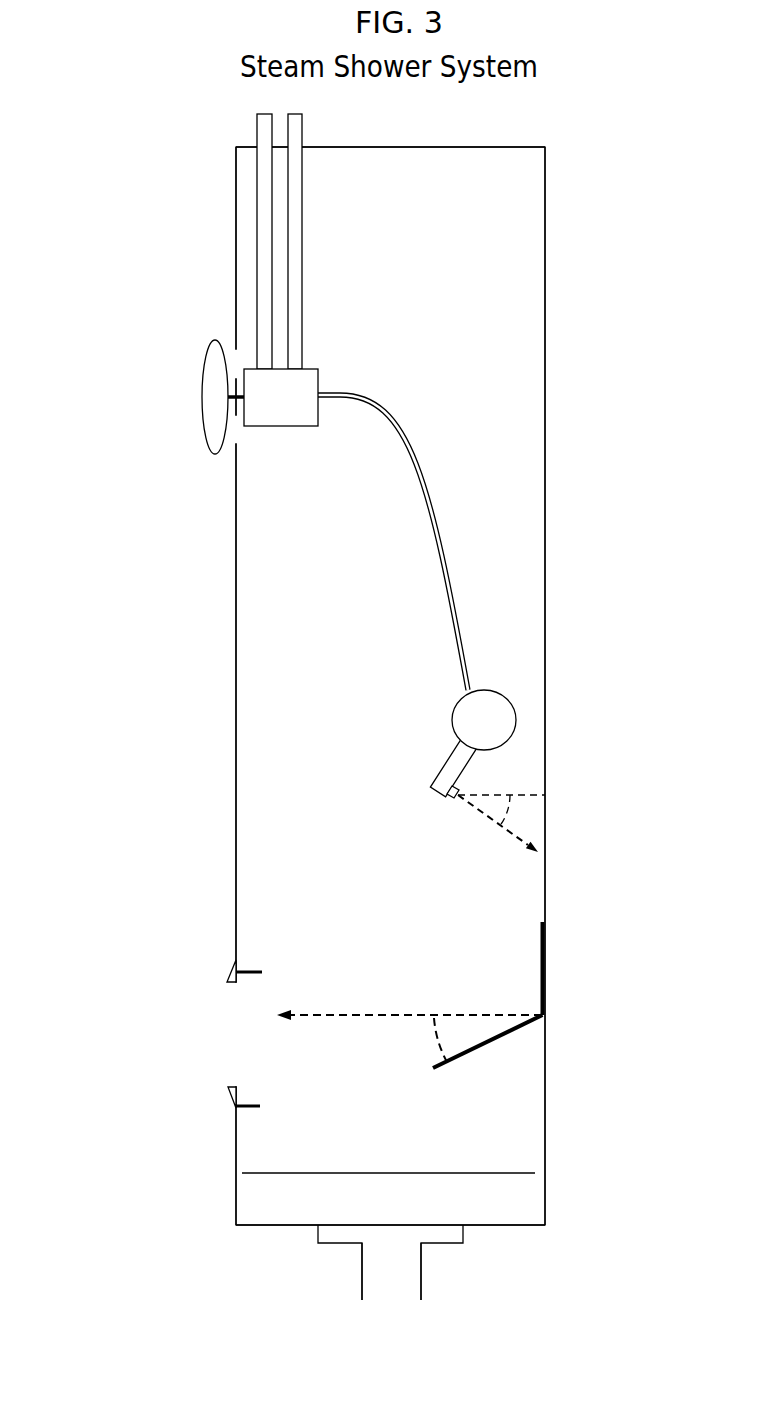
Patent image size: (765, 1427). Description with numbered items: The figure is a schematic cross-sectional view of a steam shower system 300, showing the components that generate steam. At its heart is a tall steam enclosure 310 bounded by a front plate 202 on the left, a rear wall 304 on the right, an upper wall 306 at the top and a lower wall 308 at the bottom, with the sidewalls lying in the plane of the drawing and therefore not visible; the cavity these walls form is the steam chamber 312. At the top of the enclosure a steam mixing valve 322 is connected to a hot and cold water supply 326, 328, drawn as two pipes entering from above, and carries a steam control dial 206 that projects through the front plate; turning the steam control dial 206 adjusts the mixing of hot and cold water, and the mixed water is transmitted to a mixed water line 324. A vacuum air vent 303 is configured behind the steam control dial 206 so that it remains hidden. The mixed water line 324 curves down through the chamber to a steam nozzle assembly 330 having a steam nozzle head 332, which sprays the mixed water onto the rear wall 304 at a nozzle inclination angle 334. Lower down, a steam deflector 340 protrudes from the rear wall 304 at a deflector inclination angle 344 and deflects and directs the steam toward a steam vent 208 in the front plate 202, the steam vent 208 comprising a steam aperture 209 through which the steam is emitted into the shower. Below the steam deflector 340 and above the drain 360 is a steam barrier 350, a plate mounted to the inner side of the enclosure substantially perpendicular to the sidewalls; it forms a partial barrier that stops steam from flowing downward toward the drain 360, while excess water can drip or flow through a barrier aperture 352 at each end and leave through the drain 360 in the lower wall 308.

The steam shower system 300 is at (152, 173).
The steam enclosure 310 is at (560, 243).
The front plate 202 is at (230, 638).
The rear wall 304 is at (550, 543).
The upper wall 306 is at (472, 152).
The steam chamber 312 is at (380, 607).
The steam control dial 206 is at (200, 395).
The vacuum air vent 303 is at (228, 340).
The steam mixing valve 322 is at (308, 367).
The mixed water line 324 is at (395, 413).
The hot water supply 326 is at (258, 195).
The cold water supply 328 is at (305, 178).
The steam nozzle assembly 330 is at (439, 698).
The steam nozzle head 332 is at (450, 803).
The nozzle inclination angle 334 is at (515, 815).
The steam vent 208 is at (210, 960).
The steam aperture 209 is at (227, 1035).
The steam deflector 340 is at (477, 1057).
The deflector inclination angle 344 is at (428, 1040).
The steam barrier 350 is at (388, 1172).
The barrier aperture 352 is at (242, 1173).
The lower wall 308 is at (292, 1228).
The drain 360 is at (388, 1283).